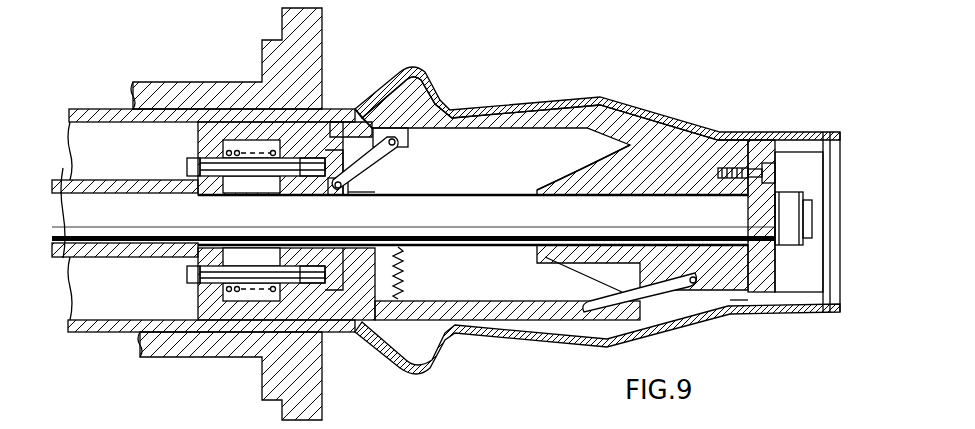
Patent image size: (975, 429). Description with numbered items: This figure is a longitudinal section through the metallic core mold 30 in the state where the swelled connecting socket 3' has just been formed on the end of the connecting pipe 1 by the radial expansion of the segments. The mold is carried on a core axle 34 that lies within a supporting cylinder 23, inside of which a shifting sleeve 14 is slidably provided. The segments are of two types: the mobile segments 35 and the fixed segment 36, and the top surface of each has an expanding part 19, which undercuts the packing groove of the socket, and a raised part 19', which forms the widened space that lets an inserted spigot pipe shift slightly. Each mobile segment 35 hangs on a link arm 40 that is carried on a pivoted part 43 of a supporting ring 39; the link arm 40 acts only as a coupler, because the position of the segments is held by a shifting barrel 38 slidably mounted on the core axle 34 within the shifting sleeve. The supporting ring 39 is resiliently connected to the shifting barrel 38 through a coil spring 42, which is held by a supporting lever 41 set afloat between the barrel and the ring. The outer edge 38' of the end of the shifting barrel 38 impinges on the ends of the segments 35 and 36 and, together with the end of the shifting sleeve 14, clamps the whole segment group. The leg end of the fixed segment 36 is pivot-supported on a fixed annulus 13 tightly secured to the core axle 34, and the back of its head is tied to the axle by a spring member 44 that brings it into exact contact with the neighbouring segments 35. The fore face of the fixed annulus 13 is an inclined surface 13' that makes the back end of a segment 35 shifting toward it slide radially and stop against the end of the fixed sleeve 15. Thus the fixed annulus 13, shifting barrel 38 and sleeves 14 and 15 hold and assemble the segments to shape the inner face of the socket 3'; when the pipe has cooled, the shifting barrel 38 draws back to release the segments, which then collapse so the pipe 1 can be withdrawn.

The connecting pipe 1 is at (728, 305).
The swelled connecting portion 3' is at (478, 61).
The fixed annulus 13 is at (642, 190).
The inclined surface 13' is at (583, 167).
The shifting sleeve 14 is at (97, 109).
The fixed sleeve 15 is at (770, 150).
The expanding part 19 is at (597, 221).
The raised part 19' is at (583, 217).
The supporting cylinder 23 is at (188, 357).
The metallic core mold 30 is at (686, 81).
The core axle 34 is at (76, 224).
The mobile segment 35 is at (503, 125).
The fixed segment 36 is at (552, 316).
The shifting barrel 38 is at (230, 221).
The outer edge 38' is at (351, 99).
The supporting ring 39 is at (333, 250).
The link arm 40 is at (364, 158).
The supporting lever 41 is at (202, 278).
The coil spring 42 is at (228, 152).
The pivoted part 43 is at (350, 190).
The spring member 44 is at (403, 272).